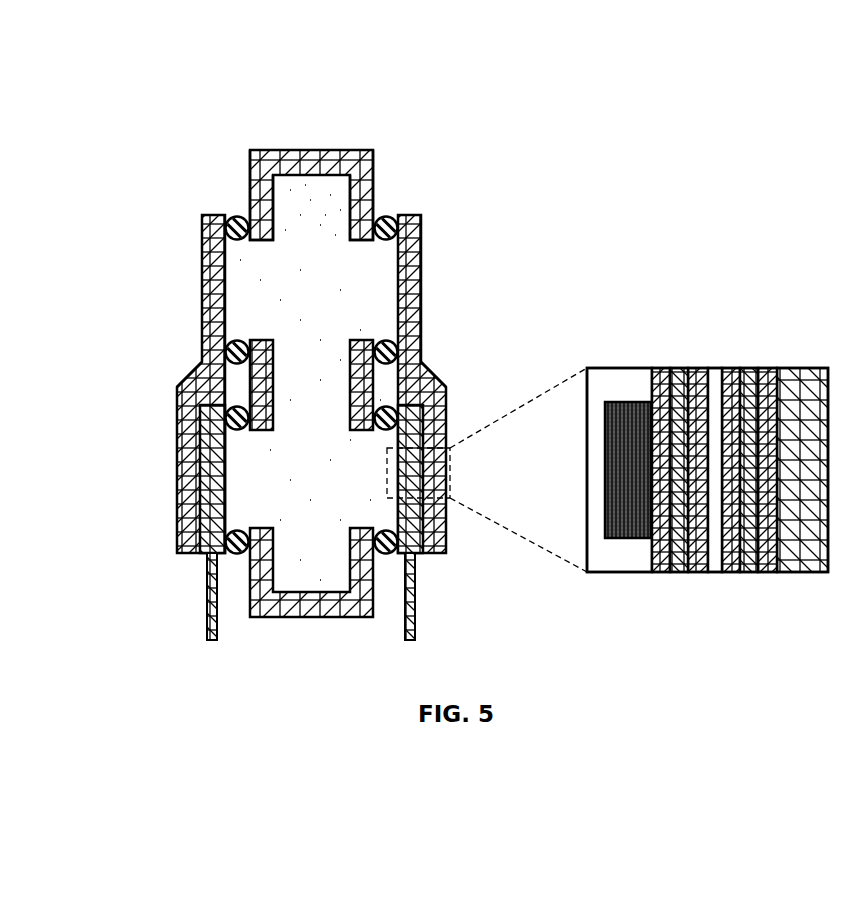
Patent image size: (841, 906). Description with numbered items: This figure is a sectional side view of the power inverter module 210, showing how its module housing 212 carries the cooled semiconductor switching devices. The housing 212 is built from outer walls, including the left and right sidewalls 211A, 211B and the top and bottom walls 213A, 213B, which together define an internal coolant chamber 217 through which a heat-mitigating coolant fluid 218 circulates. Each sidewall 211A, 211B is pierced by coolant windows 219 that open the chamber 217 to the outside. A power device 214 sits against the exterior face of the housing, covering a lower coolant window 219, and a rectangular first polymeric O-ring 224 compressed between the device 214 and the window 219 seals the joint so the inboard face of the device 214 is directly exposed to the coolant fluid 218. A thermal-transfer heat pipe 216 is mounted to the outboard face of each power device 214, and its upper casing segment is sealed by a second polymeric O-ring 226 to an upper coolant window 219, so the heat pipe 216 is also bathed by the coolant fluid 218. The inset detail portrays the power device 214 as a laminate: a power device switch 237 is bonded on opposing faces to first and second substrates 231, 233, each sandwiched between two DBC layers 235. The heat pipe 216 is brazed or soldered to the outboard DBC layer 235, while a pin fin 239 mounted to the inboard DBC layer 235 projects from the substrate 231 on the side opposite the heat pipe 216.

The power inverter module 210 is at (455, 112).
The left sidewall 211A is at (250, 172).
The right sidewall 211B is at (373, 170).
The module housing 212 is at (312, 149).
The top wall 213A is at (285, 150).
The bottom wall 213B is at (287, 618).
The semiconductor switching device 214 is at (212, 540).
The thermal-transfer heat pipe 216 is at (202, 260).
The internal coolant chamber 217 is at (324, 157).
The coolant fluid 218 is at (293, 476).
The coolant window 219 is at (248, 338).
The first polymeric O-ring 224 is at (193, 378).
The second polymeric O-ring 226 is at (228, 220).
The first substrate 231 is at (683, 370).
The second substrate 233 is at (755, 370).
The DBC layer 235 is at (664, 574).
The power device switch 237 is at (720, 370).
The pin fin 239 is at (628, 540).